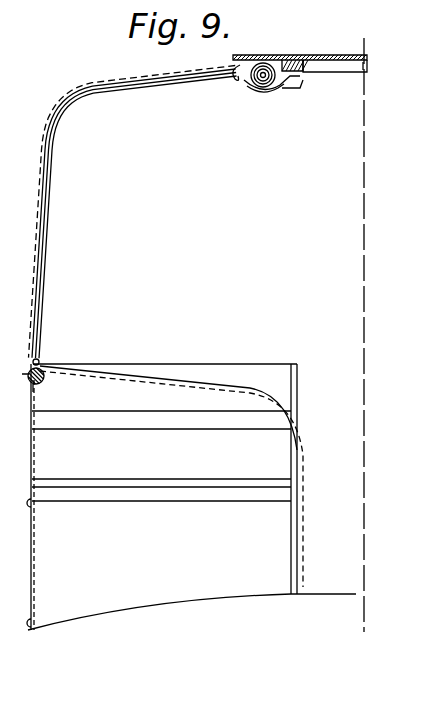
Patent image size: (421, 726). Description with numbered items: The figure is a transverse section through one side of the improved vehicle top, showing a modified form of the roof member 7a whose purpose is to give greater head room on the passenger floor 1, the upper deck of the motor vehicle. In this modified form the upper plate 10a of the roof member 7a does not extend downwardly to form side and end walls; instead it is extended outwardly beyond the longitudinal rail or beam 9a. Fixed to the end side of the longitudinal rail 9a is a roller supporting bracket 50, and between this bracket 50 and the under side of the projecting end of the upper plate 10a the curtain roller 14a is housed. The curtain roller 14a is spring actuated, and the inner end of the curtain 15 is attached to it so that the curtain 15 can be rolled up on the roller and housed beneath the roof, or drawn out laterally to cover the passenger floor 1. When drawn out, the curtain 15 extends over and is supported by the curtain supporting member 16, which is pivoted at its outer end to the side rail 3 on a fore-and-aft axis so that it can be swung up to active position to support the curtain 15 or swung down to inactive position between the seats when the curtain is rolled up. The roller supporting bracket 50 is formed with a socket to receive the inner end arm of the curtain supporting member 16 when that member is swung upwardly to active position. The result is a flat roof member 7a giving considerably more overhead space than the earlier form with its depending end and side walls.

The passenger floor 1 is at (191, 497).
The side rail 3 is at (45, 377).
The roof member 7a is at (335, 74).
The longitudinal rail 9a is at (288, 73).
The upper plate 10a is at (348, 55).
The curtain roller 14a is at (248, 92).
The curtain 15 is at (119, 80).
The curtain supporting member 16 is at (132, 212).
The roller supporting bracket 50 is at (265, 88).